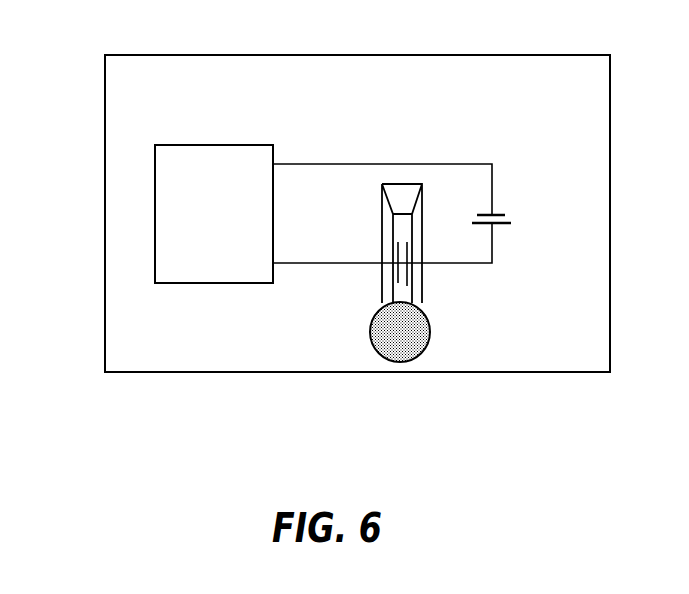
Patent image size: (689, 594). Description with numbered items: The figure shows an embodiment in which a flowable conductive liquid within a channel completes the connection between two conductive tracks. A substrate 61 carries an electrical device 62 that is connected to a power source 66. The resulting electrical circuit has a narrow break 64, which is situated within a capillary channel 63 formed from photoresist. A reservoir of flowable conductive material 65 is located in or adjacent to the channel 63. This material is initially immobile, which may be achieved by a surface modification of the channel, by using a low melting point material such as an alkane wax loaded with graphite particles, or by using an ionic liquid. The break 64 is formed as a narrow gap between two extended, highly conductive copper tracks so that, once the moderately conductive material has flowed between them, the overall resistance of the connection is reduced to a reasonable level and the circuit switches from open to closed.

The substrate 61 is at (115, 96).
The electrical device 62 is at (214, 214).
The capillary channel 63 is at (400, 192).
The narrow break 64 is at (401, 279).
The reservoir of flowable conductive material 65 is at (370, 338).
The power source 66 is at (508, 227).